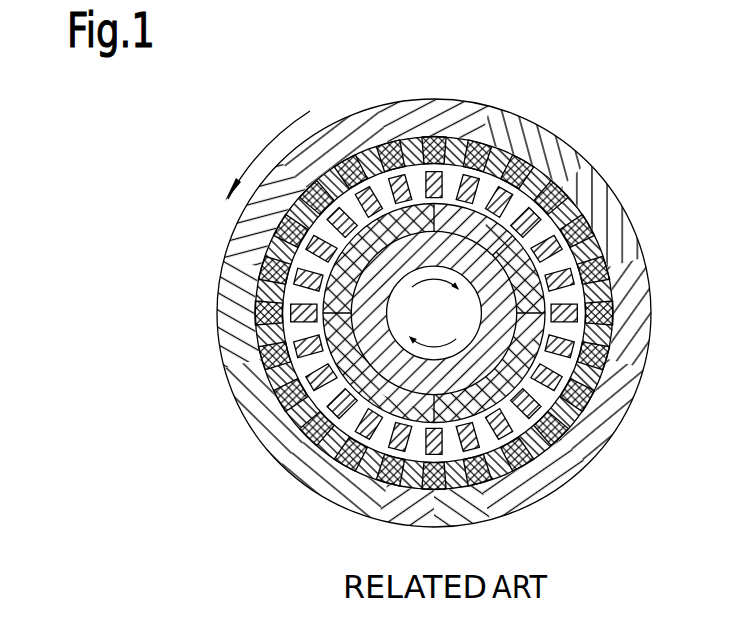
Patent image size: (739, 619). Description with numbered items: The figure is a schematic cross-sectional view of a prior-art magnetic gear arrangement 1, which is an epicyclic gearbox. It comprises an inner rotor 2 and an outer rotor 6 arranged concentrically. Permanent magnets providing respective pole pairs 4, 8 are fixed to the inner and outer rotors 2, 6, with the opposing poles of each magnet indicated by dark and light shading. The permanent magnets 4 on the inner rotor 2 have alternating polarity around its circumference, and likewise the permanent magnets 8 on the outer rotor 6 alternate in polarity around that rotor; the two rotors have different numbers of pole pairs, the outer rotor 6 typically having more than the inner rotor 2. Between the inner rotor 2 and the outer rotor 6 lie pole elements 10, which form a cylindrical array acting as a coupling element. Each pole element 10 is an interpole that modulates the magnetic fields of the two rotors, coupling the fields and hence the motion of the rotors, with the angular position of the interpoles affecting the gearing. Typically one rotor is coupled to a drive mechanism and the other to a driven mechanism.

The magnetic gear arrangement 1 is at (208, 138).
The inner rotor 2 is at (483, 292).
The permanent magnets providing pole pairs of the inner rotor 4 is at (570, 440).
The outer rotor 6 is at (525, 138).
The permanent magnets providing pole pairs of the outer rotor 8 is at (278, 397).
The pole elements 10 is at (270, 292).